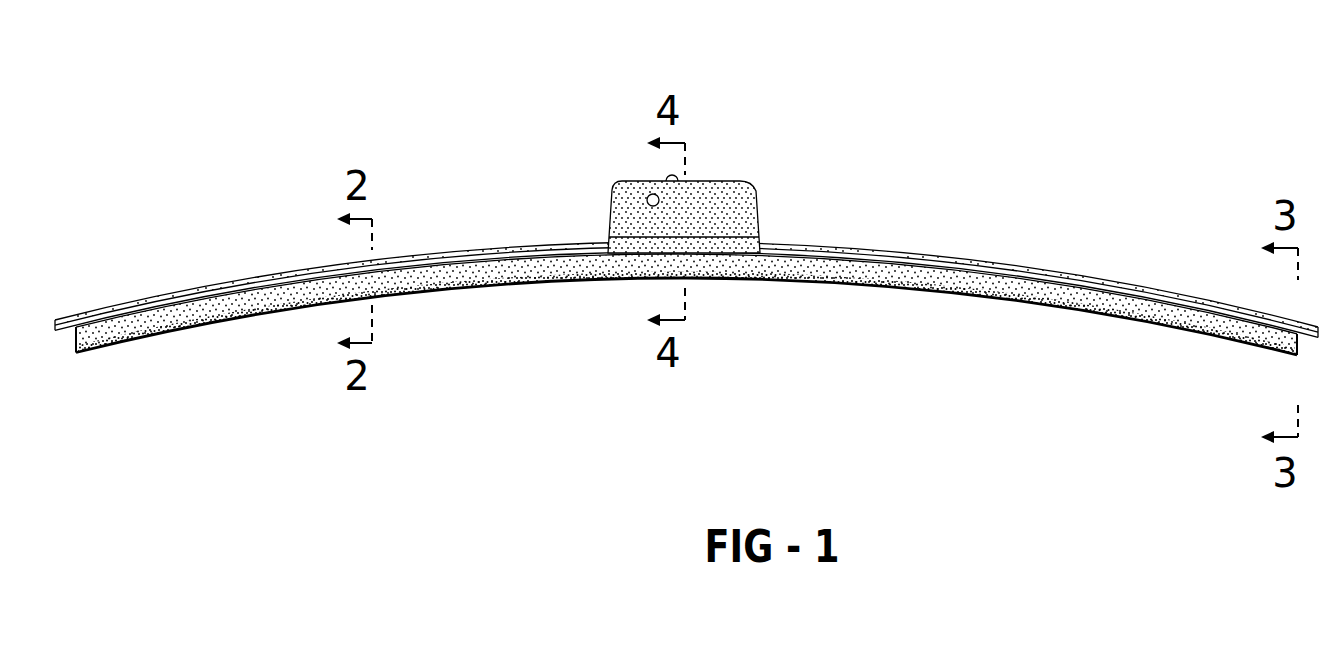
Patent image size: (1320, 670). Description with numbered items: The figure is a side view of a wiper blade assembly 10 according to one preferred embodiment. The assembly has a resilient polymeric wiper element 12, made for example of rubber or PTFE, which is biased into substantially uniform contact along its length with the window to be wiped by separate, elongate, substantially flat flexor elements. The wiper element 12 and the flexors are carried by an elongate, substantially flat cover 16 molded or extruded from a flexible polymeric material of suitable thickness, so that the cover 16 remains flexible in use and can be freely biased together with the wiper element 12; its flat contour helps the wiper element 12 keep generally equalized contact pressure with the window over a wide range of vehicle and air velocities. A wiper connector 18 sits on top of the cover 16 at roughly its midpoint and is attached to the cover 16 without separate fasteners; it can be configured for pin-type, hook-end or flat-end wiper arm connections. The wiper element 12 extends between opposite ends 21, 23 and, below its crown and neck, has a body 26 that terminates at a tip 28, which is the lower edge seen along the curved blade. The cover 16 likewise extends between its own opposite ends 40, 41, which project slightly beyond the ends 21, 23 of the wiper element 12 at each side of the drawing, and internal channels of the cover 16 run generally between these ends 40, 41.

The wiper blade assembly 10 is at (686, 230).
The wiper element 12 is at (683, 342).
The cover 16 is at (873, 251).
The wiper connector 18 is at (720, 183).
The end of wiper element 21 is at (77, 334).
The end of wiper element 23 is at (1300, 344).
The body 26 is at (562, 282).
The tip 28 is at (505, 285).
The end of cover 40 is at (56, 319).
The end of cover 41 is at (1316, 326).